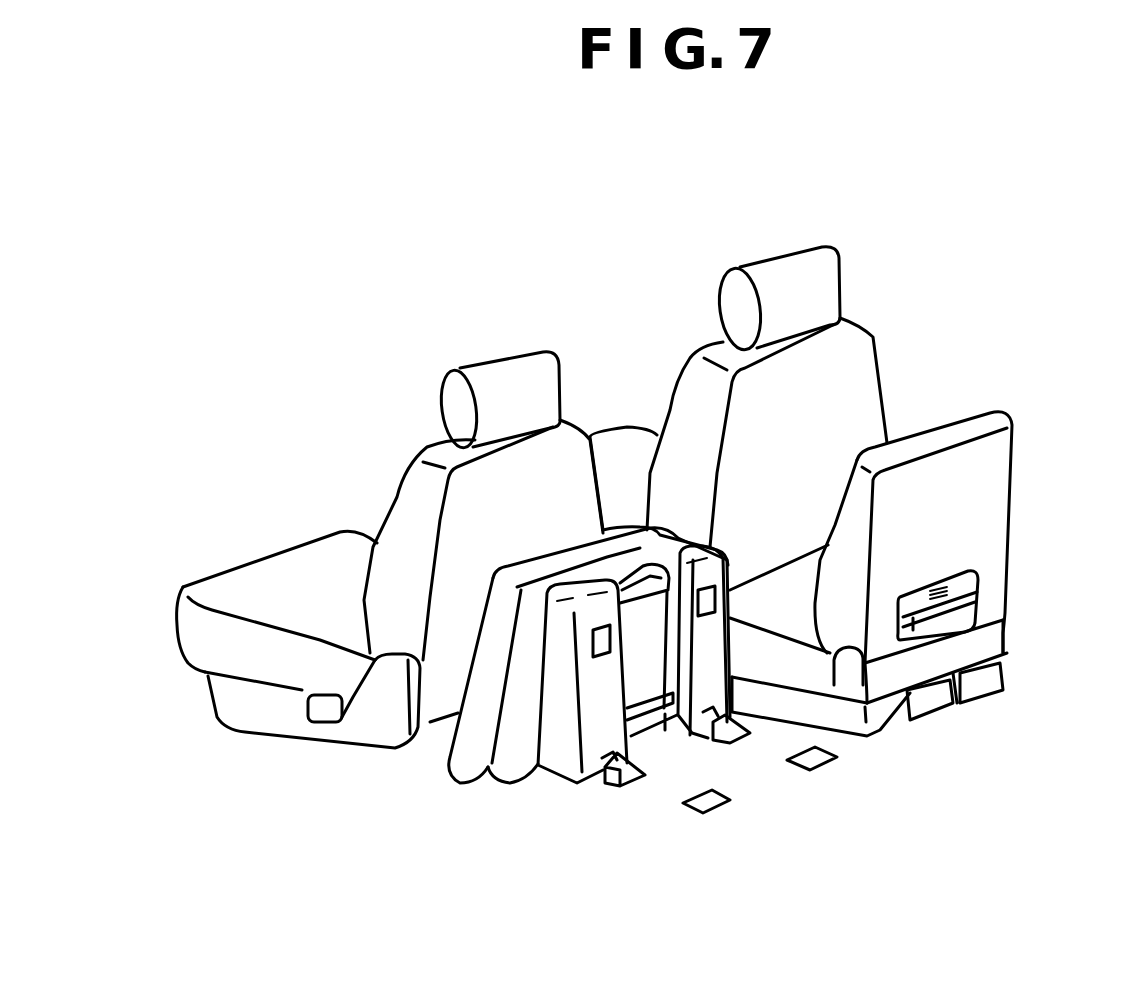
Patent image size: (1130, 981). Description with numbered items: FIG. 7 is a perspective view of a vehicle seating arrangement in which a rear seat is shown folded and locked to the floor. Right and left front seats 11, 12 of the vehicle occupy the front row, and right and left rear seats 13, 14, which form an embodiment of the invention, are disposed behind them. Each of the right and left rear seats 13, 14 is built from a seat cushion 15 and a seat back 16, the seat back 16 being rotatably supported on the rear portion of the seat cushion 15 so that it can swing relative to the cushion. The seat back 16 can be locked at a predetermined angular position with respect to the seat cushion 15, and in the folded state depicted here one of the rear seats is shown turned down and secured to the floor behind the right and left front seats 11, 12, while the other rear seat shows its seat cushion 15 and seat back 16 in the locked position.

The right front seat 11 is at (847, 383).
The left front seat 12 is at (412, 518).
The right rear seat 13 is at (1017, 472).
The left rear seat 14 is at (517, 743).
The seat cushion 15 is at (1027, 640).
The seat back 16 is at (993, 547).